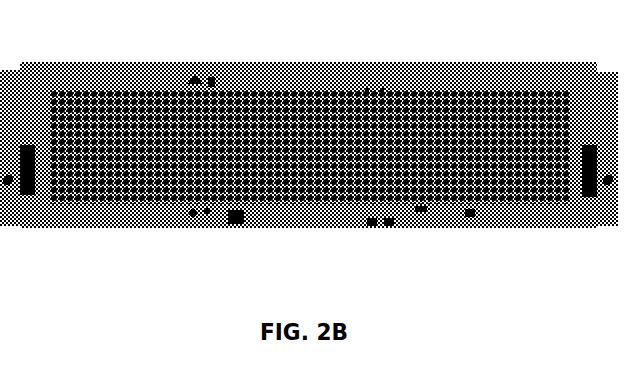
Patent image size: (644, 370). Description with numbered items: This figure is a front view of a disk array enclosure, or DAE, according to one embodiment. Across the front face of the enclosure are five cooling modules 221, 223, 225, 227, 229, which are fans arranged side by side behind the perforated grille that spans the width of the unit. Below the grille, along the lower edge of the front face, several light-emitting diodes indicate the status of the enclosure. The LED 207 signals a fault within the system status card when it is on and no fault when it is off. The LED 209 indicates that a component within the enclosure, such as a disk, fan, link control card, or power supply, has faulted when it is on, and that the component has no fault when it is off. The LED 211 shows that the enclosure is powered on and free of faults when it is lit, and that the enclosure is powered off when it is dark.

The LED 207 is at (236, 225).
The LED 209 is at (373, 226).
The LED 211 is at (388, 224).
The cooling module 221 is at (99, 118).
The cooling module 223 is at (208, 120).
The cooling module 225 is at (317, 128).
The cooling module 227 is at (426, 122).
The cooling module 229 is at (528, 125).